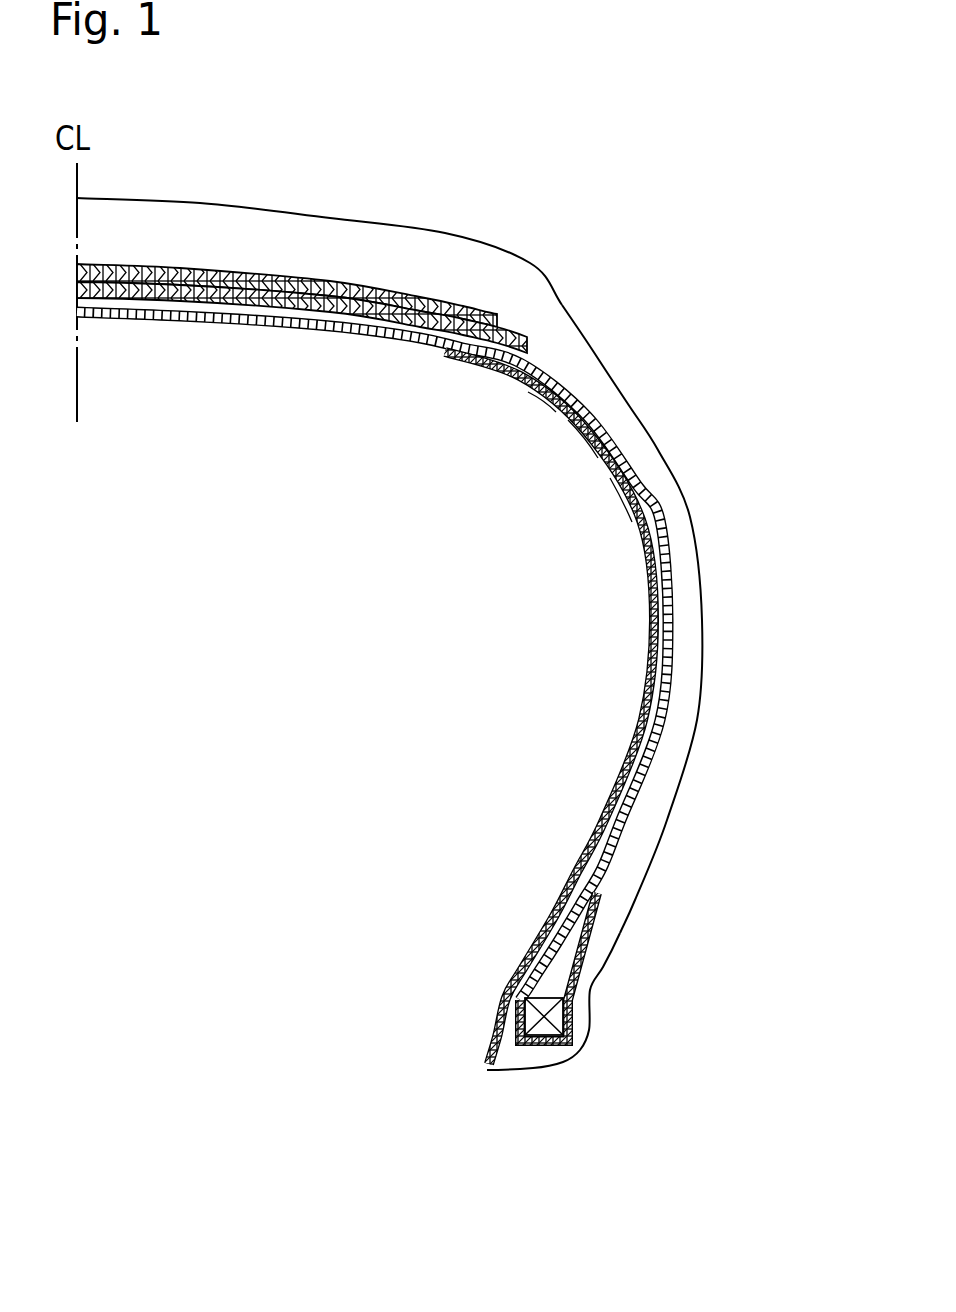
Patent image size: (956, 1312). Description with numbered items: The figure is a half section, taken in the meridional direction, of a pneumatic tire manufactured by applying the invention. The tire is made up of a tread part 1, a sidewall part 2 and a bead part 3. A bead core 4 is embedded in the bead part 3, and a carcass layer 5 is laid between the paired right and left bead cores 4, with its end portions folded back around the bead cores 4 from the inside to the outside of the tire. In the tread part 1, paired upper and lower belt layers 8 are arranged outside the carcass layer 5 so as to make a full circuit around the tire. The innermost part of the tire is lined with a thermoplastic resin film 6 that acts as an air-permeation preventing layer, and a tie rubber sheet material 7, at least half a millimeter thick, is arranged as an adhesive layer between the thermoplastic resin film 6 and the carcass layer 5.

The tread part 1 is at (444, 232).
The sidewall part 2 is at (701, 572).
The bead part 3 is at (594, 1008).
The bead core 4 is at (543, 1030).
The carcass layer 5 is at (650, 673).
The thermoplastic resin film 6 is at (622, 760).
The tie rubber sheet material 7 is at (612, 826).
The belt layer 8 is at (500, 320).